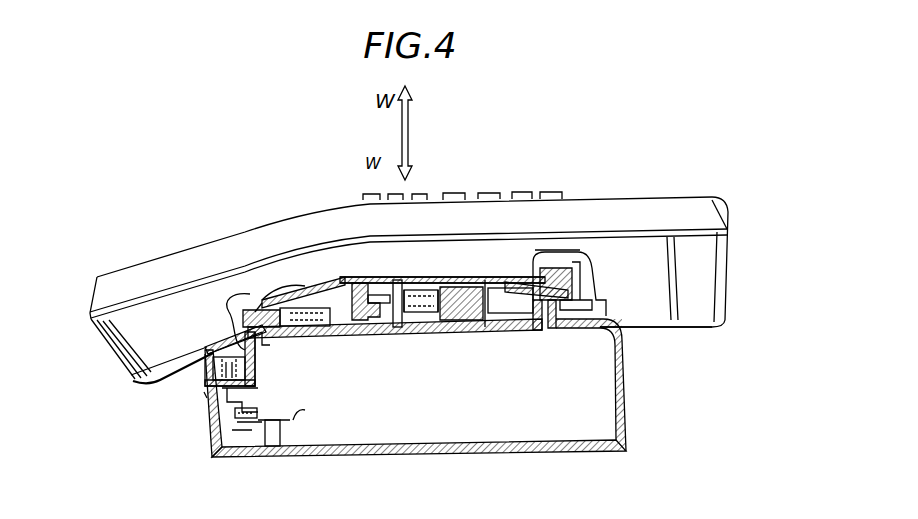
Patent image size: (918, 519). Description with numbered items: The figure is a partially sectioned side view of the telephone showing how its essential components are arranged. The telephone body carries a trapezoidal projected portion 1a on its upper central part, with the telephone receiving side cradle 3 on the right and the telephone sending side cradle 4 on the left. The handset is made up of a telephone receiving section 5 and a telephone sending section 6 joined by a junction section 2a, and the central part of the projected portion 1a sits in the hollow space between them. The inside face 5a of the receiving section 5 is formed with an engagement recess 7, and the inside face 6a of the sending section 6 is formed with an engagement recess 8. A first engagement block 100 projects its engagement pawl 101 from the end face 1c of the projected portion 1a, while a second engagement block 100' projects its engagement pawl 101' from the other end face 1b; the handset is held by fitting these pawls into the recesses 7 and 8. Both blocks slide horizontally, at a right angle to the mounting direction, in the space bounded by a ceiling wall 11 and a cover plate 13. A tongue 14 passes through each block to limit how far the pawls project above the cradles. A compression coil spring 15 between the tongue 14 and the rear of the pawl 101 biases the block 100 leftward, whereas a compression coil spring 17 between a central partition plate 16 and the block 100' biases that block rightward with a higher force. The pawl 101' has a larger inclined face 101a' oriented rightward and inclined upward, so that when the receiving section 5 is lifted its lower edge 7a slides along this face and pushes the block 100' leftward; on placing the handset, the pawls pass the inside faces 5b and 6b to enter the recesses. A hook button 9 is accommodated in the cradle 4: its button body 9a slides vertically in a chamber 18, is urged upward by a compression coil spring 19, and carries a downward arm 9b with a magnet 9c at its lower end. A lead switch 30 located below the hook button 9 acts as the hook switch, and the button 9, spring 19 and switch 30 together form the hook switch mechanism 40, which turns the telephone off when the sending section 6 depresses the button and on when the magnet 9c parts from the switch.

The projected portion 1a is at (405, 282).
The end face 1b is at (566, 296).
The end face 1c is at (260, 307).
The junction section 2a is at (406, 232).
The telephone receiving side cradle 3 is at (618, 326).
The telephone sending side cradle 4 is at (133, 372).
The telephone receiving section 5 is at (704, 314).
The inside face 5a is at (547, 331).
The inside face 5b is at (567, 330).
The telephone sending section 6 is at (120, 343).
The inside face 6a is at (267, 302).
The inside face 6b is at (260, 347).
The engagement recess 7 is at (568, 304).
The lower edge 7a is at (545, 290).
The engagement recess 8 is at (232, 296).
The hook button 9 is at (212, 347).
The button body 9a is at (216, 351).
The arm 9b is at (228, 392).
The magnet 9c is at (225, 412).
The ceiling wall 11 is at (440, 282).
The cover plate 13 is at (518, 335).
The tongue 14 is at (327, 331).
The compression coil spring 15 is at (308, 312).
The central partition plate 16 is at (400, 335).
The compression coil spring 17 is at (440, 335).
The chamber 18 is at (207, 370).
The compression coil spring 19 is at (247, 388).
The lead switch 30 is at (250, 438).
The hook switch mechanism 40 is at (200, 392).
The first engagement block 100 is at (435, 218).
The second engagement block 100' is at (442, 218).
The engagement pawl 101 is at (294, 271).
The engagement pawl 101' is at (528, 268).
The larger inclined face 101a' is at (612, 295).